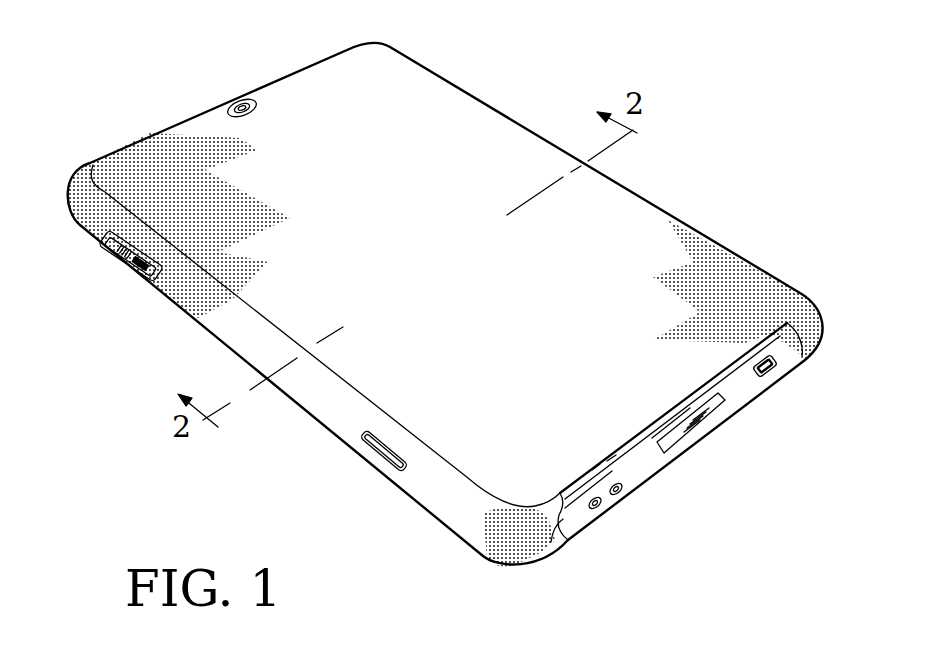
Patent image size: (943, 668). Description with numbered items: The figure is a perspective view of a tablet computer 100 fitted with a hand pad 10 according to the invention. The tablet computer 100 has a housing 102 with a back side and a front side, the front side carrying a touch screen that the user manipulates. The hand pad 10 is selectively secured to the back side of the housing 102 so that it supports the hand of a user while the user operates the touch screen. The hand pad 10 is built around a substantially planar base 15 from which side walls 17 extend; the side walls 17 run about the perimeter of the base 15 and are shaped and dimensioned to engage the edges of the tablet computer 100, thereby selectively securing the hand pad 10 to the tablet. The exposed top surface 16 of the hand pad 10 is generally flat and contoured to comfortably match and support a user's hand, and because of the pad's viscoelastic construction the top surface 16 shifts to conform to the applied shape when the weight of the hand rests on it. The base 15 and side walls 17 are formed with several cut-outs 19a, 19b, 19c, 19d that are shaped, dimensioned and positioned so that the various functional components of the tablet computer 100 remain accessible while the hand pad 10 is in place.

The hand pad 10 is at (460, 123).
The base 15 is at (657, 263).
The top surface 16 is at (177, 178).
The side walls 17 is at (438, 507).
The cut-out 19a is at (95, 230).
The cut-out 19b is at (240, 100).
The cut-out 19c is at (373, 447).
The cut-out 19d is at (555, 537).
The tablet computer 100 is at (633, 477).
The housing 102 is at (737, 392).